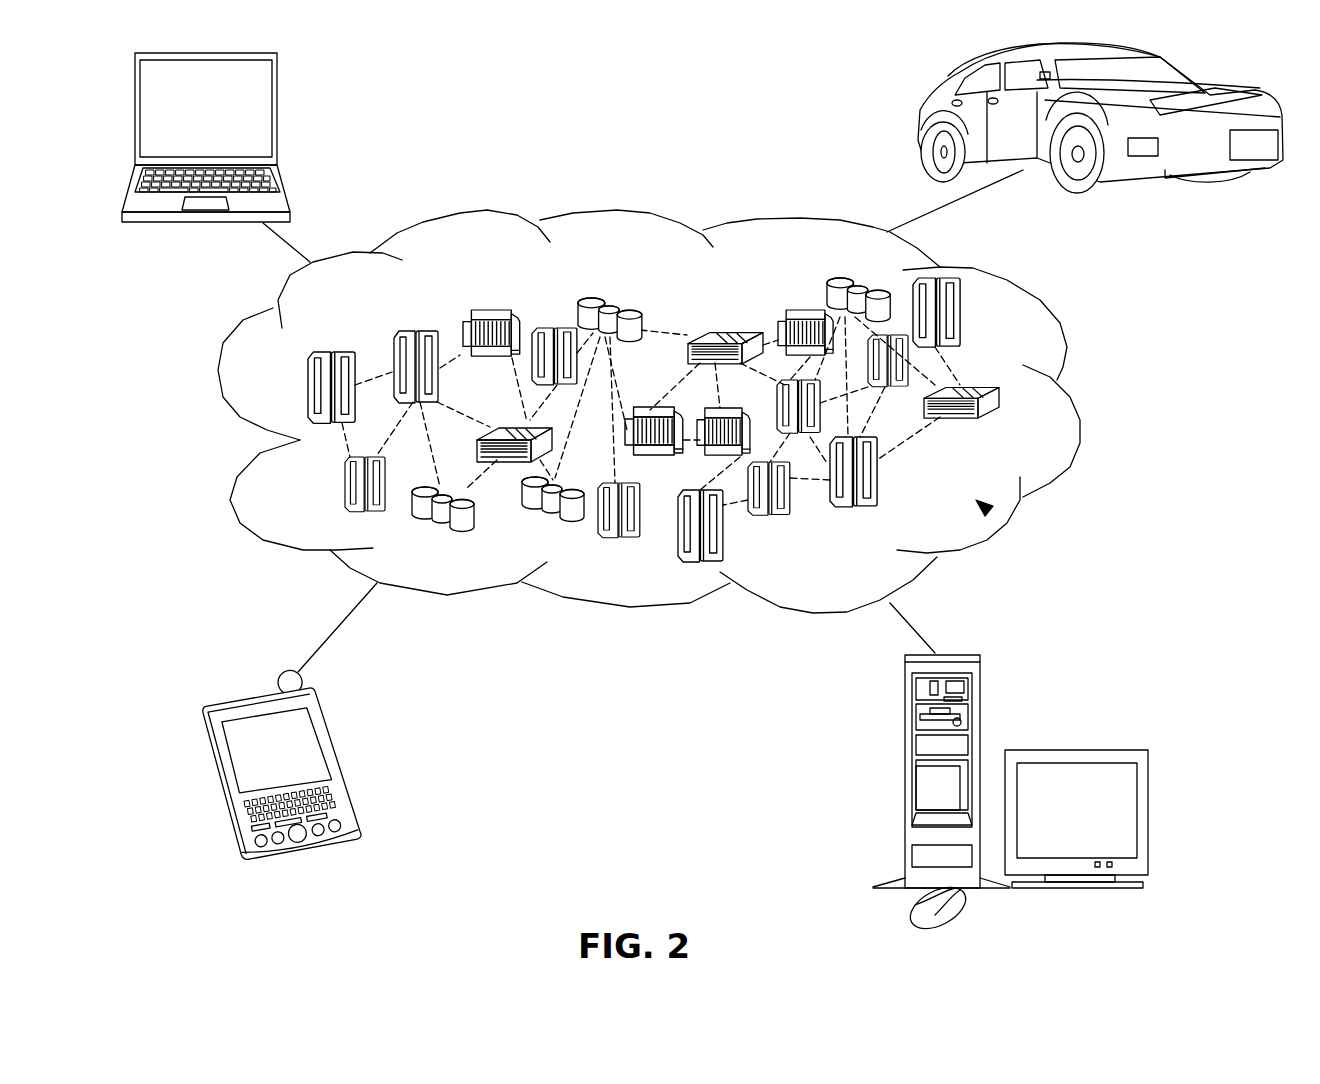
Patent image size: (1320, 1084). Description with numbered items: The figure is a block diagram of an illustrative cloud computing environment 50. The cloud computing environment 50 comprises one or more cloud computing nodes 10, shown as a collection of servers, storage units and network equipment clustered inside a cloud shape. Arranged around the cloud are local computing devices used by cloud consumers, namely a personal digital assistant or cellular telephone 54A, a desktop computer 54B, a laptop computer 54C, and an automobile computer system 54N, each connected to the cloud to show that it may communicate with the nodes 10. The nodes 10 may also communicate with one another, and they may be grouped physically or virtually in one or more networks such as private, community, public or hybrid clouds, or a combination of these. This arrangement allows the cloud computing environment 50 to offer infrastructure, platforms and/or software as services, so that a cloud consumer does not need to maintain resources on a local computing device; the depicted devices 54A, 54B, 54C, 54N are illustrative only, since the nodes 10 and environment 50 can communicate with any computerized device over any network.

The cloud computing nodes 10 is at (987, 508).
The cloud computing environment 50 is at (1073, 400).
The personal digital assistant or cellular telephone 54A is at (335, 730).
The desktop computer 54B is at (905, 717).
The laptop computer 54C is at (277, 90).
The automobile computer system 54N is at (920, 110).